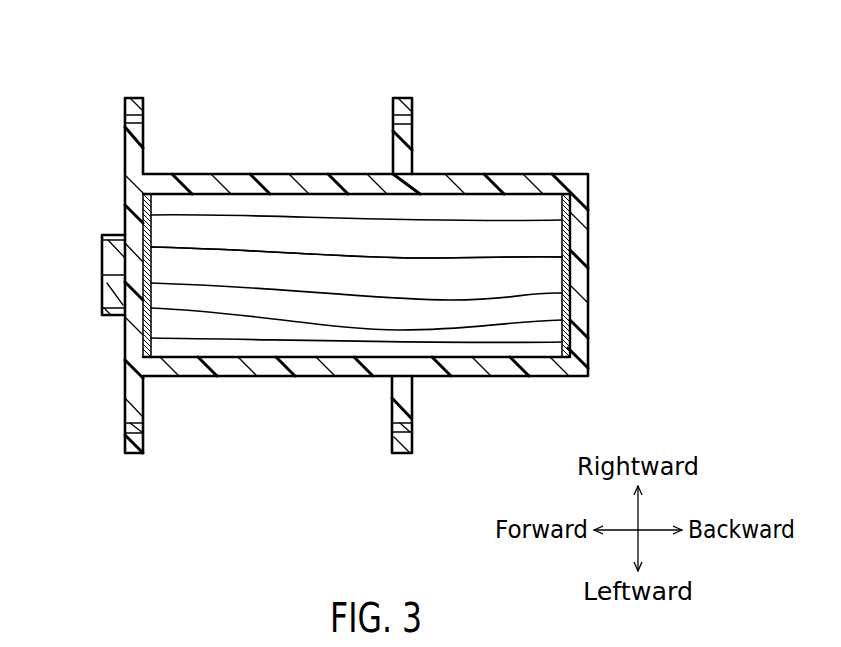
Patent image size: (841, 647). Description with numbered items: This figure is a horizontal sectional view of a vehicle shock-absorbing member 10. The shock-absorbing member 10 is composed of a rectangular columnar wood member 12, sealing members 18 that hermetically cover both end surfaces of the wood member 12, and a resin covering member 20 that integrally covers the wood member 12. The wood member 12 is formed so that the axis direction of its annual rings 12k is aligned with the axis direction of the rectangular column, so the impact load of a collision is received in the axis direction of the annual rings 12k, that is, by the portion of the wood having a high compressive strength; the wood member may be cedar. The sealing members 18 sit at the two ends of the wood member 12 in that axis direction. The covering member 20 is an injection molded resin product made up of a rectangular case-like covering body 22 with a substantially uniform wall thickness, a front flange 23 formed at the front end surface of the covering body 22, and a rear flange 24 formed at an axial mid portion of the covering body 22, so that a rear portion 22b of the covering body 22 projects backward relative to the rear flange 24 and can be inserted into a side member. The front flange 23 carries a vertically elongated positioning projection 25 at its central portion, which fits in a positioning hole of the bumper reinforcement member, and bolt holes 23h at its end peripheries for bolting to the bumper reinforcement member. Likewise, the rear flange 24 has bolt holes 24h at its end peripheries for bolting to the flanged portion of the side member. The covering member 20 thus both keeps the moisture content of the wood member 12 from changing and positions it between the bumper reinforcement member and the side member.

The shock-absorbing member 10 is at (337, 118).
The wood member 12 is at (474, 235).
The annual rings 12k is at (280, 252).
The sealing member 18 is at (567, 194).
The covering member 20 is at (455, 170).
The covering body 22 is at (303, 370).
The rear portion 22b is at (532, 369).
The front flange 23 is at (134, 153).
The bolt hole 23h is at (123, 445).
The rear flange 24 is at (402, 393).
The bolt hole 24h is at (410, 438).
The positioning projection 25 is at (108, 236).